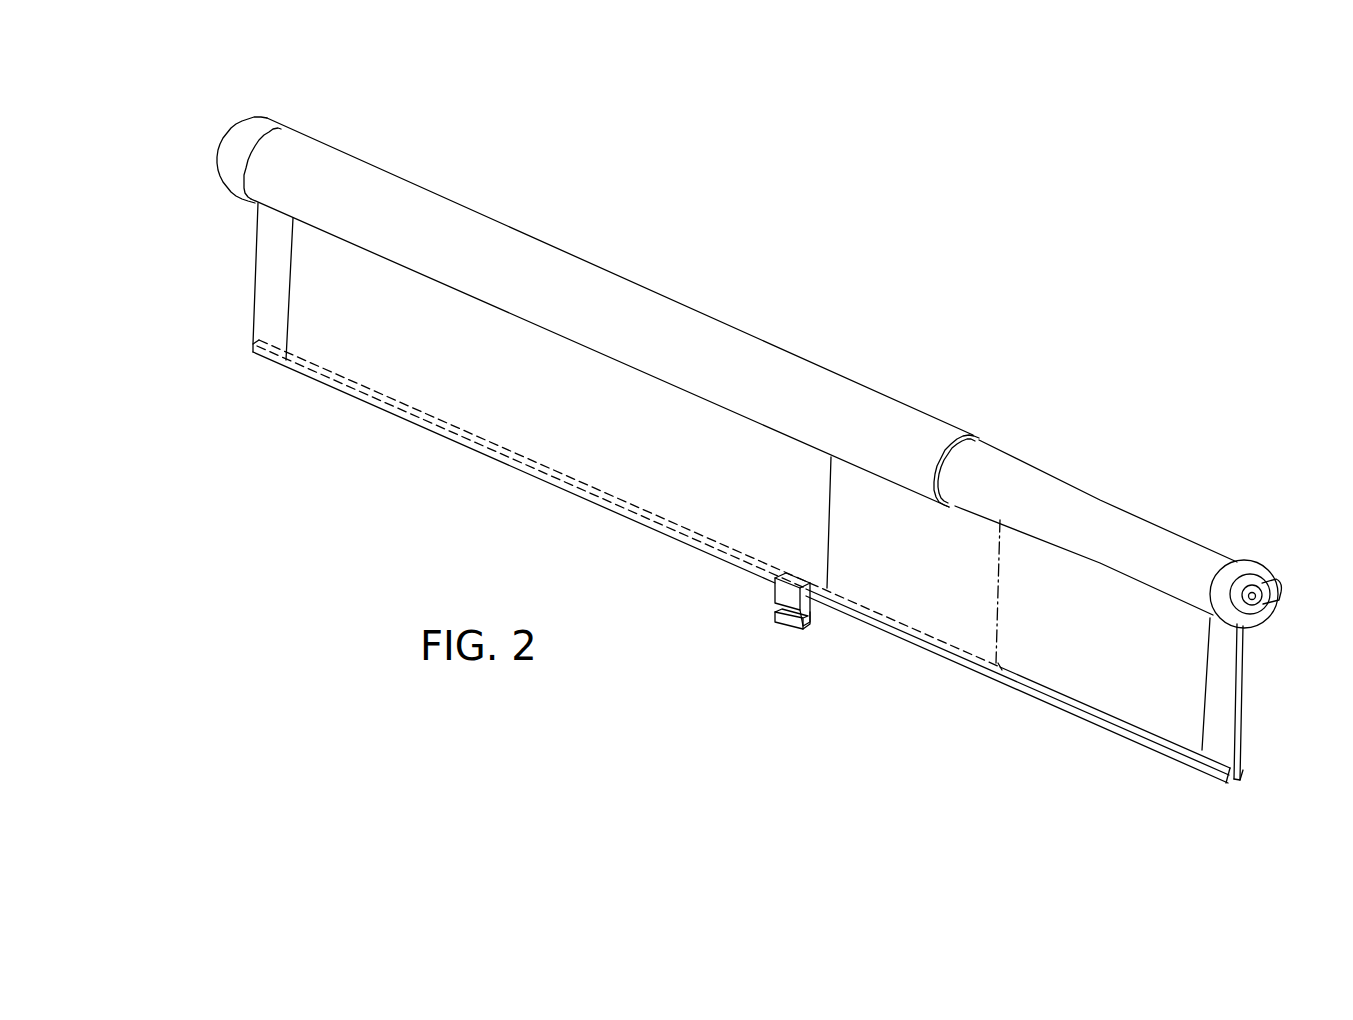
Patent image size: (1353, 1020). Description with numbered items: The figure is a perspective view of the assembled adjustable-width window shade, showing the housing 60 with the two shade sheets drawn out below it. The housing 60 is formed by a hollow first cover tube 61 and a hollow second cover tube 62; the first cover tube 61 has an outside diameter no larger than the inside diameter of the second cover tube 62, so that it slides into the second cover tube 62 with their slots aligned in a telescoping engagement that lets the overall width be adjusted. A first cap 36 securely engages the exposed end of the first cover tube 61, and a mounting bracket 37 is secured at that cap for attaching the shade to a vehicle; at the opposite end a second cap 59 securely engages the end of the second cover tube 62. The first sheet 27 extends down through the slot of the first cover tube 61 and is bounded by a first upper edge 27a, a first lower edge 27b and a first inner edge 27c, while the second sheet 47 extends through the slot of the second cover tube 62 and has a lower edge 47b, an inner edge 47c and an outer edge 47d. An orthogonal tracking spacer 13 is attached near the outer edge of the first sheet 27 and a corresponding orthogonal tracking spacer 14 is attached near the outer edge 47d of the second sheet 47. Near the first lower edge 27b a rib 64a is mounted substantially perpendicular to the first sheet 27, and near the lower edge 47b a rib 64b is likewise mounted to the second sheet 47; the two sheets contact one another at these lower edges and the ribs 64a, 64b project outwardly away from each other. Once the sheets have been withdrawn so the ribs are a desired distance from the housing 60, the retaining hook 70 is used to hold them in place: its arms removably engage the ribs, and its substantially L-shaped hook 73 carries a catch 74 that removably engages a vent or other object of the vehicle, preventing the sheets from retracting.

The orthogonal tracking spacer 13 is at (1203, 688).
The orthogonal tracking spacer 14 is at (288, 328).
The first sheet 27 is at (994, 706).
The first upper edge 27a is at (1245, 680).
The first lower edge 27b is at (1241, 779).
The first inner edge 27c is at (830, 547).
The first cap 36 is at (1241, 567).
The mounting bracket 37 is at (1283, 588).
The second sheet 47 is at (514, 491).
The lower edge 47b is at (639, 526).
The inner edge 47c is at (997, 602).
The outer edge 47d is at (256, 278).
The second cap 59 is at (256, 127).
The housing 60 is at (850, 339).
The first cover tube 61 is at (1108, 522).
The second cover tube 62 is at (530, 263).
The rib 64a is at (1226, 787).
The rib 64b is at (458, 446).
The retaining hook 70 is at (744, 621).
The L-shaped hook 73 is at (818, 607).
The catch 74 is at (788, 628).